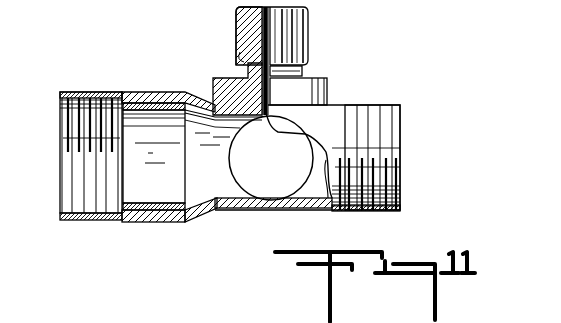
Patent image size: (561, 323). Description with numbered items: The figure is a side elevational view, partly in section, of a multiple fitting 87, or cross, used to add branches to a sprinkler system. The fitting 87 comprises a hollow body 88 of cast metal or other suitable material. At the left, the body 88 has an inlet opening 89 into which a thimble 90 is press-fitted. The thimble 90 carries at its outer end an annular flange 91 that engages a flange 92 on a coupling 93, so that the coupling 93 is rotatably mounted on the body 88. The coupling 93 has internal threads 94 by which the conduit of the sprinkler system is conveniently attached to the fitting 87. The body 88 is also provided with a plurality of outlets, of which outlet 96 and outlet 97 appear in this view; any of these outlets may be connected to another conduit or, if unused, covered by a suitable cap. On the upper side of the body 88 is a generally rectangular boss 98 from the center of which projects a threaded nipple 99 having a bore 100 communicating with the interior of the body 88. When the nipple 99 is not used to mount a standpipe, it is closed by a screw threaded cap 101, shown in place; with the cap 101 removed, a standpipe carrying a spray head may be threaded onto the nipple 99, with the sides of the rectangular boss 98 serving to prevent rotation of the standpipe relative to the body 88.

The multiple fitting 87 is at (218, 210).
The body 88 is at (290, 212).
The inlet opening 89 is at (182, 220).
The thimble 90 is at (148, 222).
The annular flange 91 is at (115, 222).
The flange 92 is at (140, 222).
The coupling 93 is at (76, 222).
The internal threads 94 is at (60, 102).
The outlet 96 is at (400, 162).
The outlet 97 is at (240, 170).
The rectangular boss 98 is at (328, 89).
The threaded nipple 99 is at (247, 58).
The bore 100 is at (237, 28).
The screw threaded cap 101 is at (308, 28).